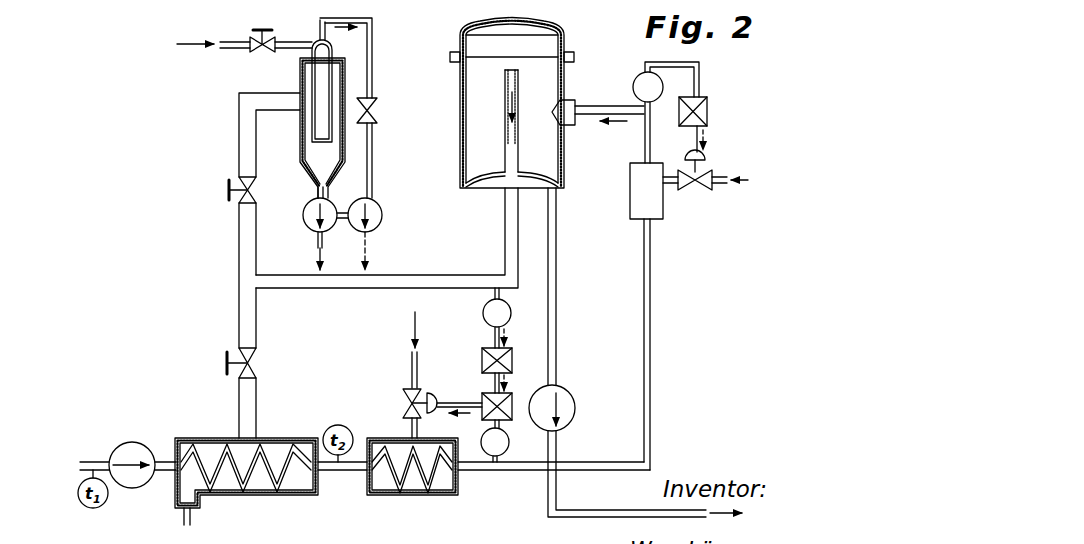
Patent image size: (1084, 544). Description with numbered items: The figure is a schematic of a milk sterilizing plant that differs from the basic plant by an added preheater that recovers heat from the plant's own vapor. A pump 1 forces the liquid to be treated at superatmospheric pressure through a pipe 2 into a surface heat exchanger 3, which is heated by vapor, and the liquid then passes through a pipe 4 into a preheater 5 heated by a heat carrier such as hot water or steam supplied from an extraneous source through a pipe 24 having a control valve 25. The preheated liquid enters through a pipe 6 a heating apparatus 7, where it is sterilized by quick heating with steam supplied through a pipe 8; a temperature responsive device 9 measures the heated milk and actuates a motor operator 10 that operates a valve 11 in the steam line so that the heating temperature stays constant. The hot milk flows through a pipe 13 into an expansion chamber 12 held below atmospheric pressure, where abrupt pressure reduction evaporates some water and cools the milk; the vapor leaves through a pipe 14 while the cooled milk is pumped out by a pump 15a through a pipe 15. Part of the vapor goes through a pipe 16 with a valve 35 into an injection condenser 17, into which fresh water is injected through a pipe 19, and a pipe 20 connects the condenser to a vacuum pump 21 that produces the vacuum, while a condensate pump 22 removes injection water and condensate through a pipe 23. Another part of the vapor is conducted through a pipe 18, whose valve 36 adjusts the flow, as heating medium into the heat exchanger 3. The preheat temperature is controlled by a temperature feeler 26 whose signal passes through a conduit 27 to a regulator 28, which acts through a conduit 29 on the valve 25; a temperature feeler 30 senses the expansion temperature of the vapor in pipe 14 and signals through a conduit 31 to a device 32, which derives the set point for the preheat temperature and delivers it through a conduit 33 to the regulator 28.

The pump 1 is at (123, 443).
The pipe 2 is at (163, 461).
The surface heat exchanger 3 is at (283, 440).
The pipe 4 is at (346, 471).
The preheater 5 is at (418, 496).
The pipe 6 is at (651, 350).
The heating apparatus 7 is at (657, 205).
The pipe 8 is at (722, 186).
The temperature responsive device 9 is at (634, 80).
The motor operator 10 is at (707, 110).
The valve 11 is at (702, 177).
The expansion chamber 12 is at (465, 122).
The pipe 13 is at (592, 118).
The pipe 14 is at (512, 243).
The pipe 15 is at (557, 315).
The pump 15a is at (568, 395).
The pipe 16 is at (247, 137).
The condenser 17 is at (303, 72).
The pipe 18 is at (239, 311).
The pipe 19 is at (232, 48).
The pipe 20 is at (372, 75).
The vacuum pump 21 is at (378, 210).
The condensate pump 22 is at (308, 204).
The pipe 23 is at (317, 240).
The pipe 24 is at (412, 362).
The control valve 25 is at (407, 401).
The temperature feeler 26 is at (509, 446).
The conduit 27 is at (490, 423).
The regulator 28 is at (509, 398).
The conduit 29 is at (437, 395).
The temperature feeler 30 is at (483, 310).
The conduit 31 is at (491, 336).
The device 32 is at (509, 356).
The conduit 33 is at (490, 381).
The valve 35 is at (244, 195).
The valve 36 is at (244, 356).